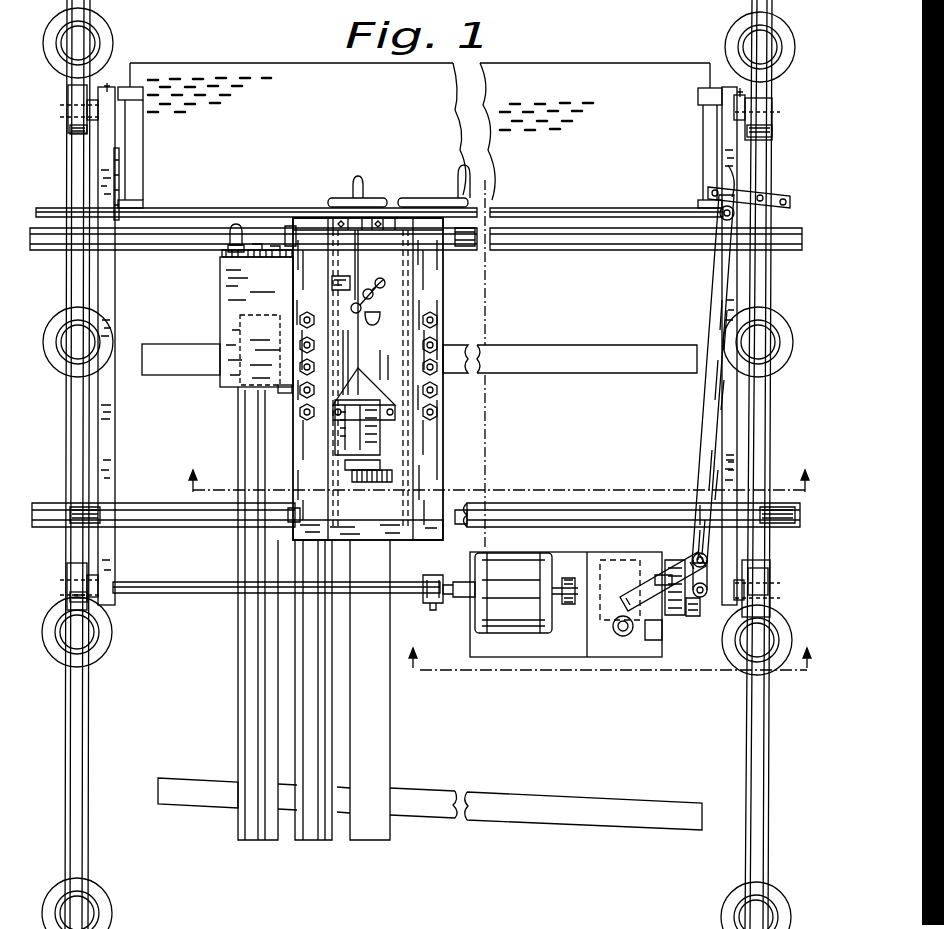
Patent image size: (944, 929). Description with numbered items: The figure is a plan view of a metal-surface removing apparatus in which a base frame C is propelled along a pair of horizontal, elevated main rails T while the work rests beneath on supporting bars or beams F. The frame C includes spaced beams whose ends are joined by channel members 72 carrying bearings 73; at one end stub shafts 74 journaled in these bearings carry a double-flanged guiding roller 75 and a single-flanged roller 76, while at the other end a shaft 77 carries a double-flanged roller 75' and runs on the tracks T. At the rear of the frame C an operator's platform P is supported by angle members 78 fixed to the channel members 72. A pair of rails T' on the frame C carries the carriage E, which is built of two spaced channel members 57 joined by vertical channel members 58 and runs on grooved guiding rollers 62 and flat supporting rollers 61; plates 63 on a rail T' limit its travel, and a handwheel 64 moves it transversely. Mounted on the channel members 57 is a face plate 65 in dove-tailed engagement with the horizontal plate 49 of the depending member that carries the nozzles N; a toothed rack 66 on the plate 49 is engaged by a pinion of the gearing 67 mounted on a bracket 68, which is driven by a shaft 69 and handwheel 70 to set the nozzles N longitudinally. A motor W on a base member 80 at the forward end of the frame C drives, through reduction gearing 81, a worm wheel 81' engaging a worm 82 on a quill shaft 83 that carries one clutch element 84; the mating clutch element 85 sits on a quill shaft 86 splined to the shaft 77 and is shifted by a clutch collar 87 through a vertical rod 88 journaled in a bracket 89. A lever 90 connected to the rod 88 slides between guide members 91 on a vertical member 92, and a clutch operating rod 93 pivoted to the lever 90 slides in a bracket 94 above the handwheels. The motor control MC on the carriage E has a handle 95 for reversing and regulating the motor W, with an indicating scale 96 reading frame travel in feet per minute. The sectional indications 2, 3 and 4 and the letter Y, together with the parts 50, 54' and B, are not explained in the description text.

The main rails T is at (423, 464).
The rails T' is at (416, 392).
The platform P is at (640, 78).
The angle members 78 is at (143, 105).
The channel members 72 is at (120, 310).
The yoke block Y is at (68, 107).
The bearings 73 is at (95, 100).
The stub shafts 74 is at (107, 86).
The roller 76 is at (70, 126).
The roller 75 is at (779, 126).
The roller 75' is at (777, 567).
The bracket 94 is at (114, 192).
The vertical member 92 is at (772, 230).
The section line 4 is at (487, 193).
The plates 63 is at (55, 508).
The section line 3 is at (499, 468).
The shaft 77 is at (200, 594).
The bars or beams F is at (630, 346).
The base frame C is at (102, 413).
The motor control MC is at (256, 325).
The handle 95 is at (233, 250).
The indicating scale 96 is at (245, 257).
The carriage E is at (450, 300).
The channel members 57 is at (300, 277).
The channel members 58 is at (392, 210).
The rod 50 is at (345, 283).
The horizontal plate 49 is at (341, 280).
The link 54' is at (373, 289).
The face plate 65 is at (418, 320).
The shaft 69 is at (360, 345).
The bracket 68 is at (384, 376).
The gearing 67 is at (374, 396).
The toothed rack 66 is at (385, 438).
The nozzles N is at (395, 471).
The handwheel 70 is at (355, 197).
The handwheel 64 is at (435, 198).
The rollers 62 is at (300, 228).
The rollers 61 is at (292, 516).
The belts B is at (365, 842).
The base member 80 is at (570, 652).
The motor W is at (492, 614).
The quill shaft 83 is at (605, 580).
The worm 82 is at (600, 560).
The worm wheel 81' is at (601, 626).
The clutch element 84 is at (665, 598).
The clutch element 85 is at (705, 610).
The quill shaft 86 is at (700, 606).
The reduction gearing 81 is at (674, 640).
The clutch collar 87 is at (707, 590).
The bracket 89 is at (648, 565).
The rod 88 is at (702, 520).
The lever 90 is at (712, 386).
The clutch operating rod 93 is at (655, 213).
The guide members 91 is at (730, 165).
The section line 2 is at (609, 648).